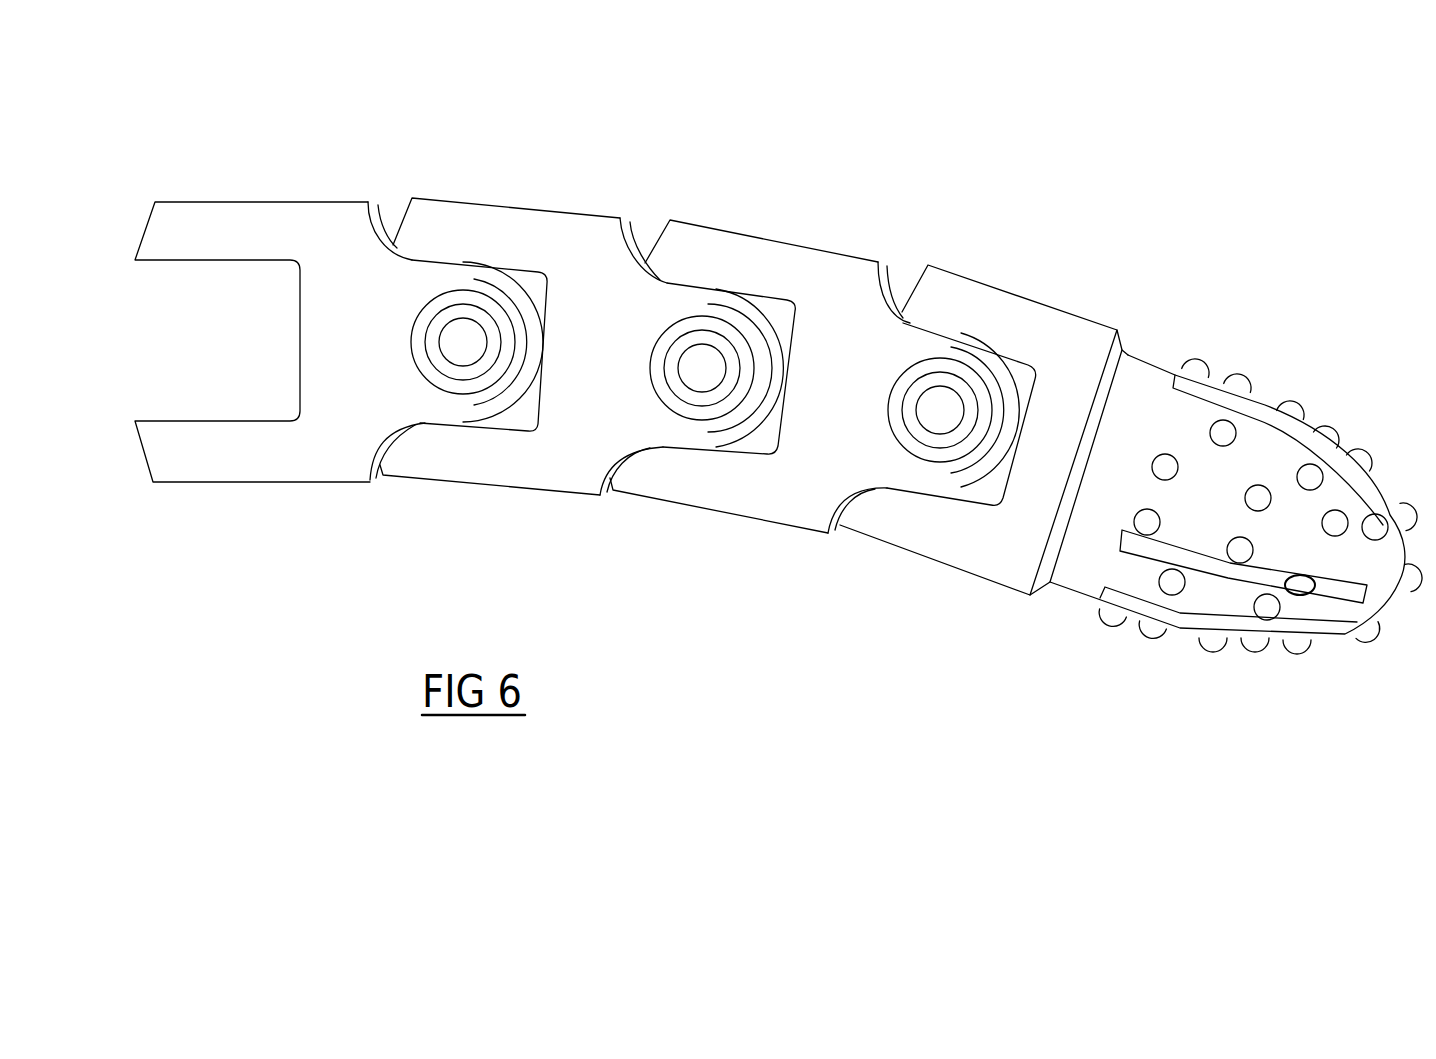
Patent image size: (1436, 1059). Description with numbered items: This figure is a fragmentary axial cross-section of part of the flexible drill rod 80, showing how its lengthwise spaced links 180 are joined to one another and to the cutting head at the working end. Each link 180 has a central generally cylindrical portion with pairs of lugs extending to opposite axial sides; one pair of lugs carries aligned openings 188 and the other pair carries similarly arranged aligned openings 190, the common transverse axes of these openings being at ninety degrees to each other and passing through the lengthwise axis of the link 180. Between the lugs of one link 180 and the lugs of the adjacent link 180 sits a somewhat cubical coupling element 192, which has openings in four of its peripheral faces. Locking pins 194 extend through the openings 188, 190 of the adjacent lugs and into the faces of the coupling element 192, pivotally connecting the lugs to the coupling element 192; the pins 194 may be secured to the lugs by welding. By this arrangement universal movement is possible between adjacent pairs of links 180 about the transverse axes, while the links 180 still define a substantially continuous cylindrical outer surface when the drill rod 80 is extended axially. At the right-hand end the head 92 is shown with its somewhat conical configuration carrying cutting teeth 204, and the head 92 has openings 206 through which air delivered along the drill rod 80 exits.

The flexible drill rod 80 is at (892, 159).
The link 180 is at (237, 176).
The openings 190 is at (700, 240).
The coupling element 192 is at (757, 442).
The locking pin 194 is at (942, 405).
The openings 188 is at (925, 482).
The head 92 is at (1160, 338).
The cutting teeth 204 is at (1298, 412).
The openings 206 is at (1297, 592).